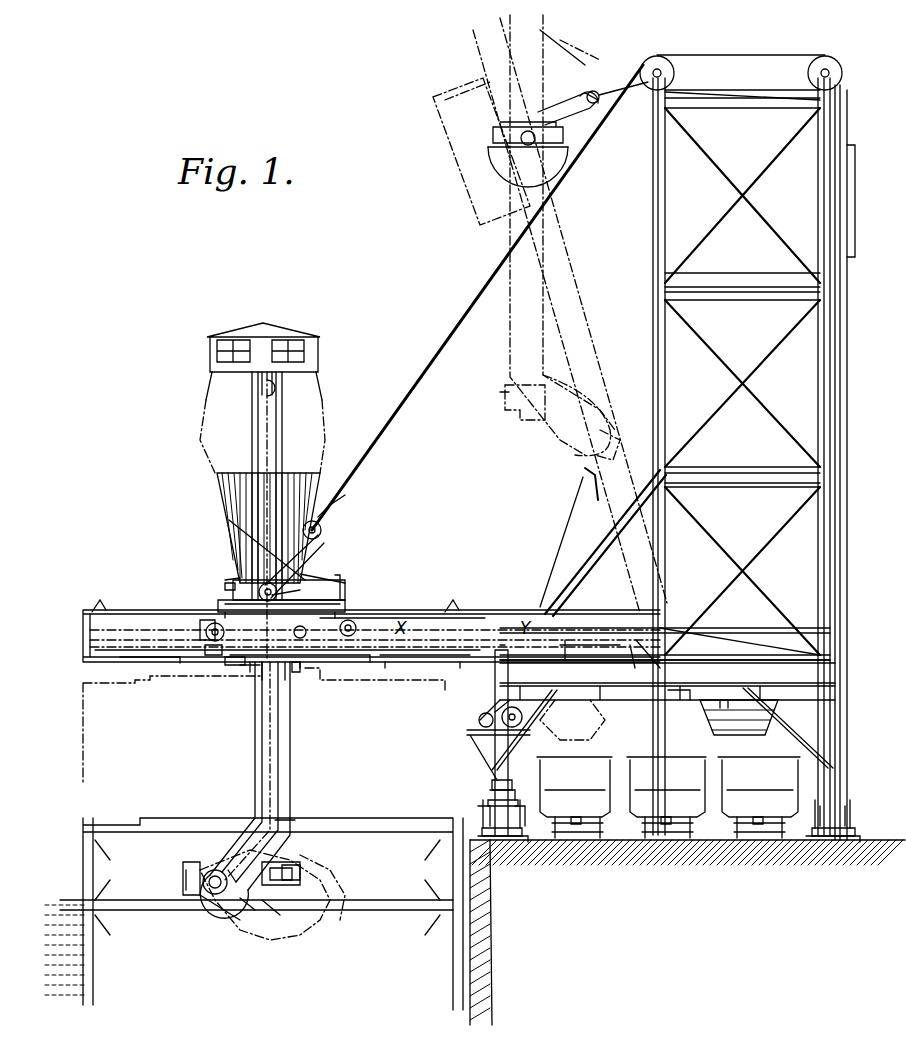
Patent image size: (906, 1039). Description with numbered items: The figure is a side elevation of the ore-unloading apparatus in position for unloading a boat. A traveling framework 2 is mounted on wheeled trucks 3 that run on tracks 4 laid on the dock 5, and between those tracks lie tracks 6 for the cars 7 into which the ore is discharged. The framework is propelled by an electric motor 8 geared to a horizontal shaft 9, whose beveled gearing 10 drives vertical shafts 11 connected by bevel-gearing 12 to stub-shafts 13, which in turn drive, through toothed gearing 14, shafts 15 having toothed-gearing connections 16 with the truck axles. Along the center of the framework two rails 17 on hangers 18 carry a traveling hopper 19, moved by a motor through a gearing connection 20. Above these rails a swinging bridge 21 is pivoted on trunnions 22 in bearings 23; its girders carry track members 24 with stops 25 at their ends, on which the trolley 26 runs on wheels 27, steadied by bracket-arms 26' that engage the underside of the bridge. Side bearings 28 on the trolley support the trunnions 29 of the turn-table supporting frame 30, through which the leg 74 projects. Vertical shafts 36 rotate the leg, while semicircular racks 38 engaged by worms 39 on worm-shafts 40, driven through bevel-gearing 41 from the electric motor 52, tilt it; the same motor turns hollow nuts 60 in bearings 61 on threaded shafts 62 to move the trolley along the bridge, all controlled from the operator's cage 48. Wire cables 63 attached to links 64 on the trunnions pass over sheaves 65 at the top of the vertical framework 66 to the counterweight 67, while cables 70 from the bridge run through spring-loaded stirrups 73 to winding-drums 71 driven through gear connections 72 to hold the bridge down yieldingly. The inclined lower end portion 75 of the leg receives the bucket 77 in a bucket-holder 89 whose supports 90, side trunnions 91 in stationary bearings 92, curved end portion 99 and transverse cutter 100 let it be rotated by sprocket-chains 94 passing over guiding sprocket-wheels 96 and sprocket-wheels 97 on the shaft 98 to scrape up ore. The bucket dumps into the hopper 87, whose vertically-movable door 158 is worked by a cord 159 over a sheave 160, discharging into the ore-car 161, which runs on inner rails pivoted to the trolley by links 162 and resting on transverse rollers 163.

The traveling framework 2 is at (667, 681).
The wheeled trucks 3 is at (668, 824).
The tracks 4 is at (822, 842).
The dock 5 is at (687, 932).
The tracks 6 is at (765, 842).
The cars 7 is at (668, 787).
The electric motor 8 is at (590, 665).
The horizontal shaft 9 is at (645, 662).
The beveled gearing 10 is at (805, 680).
The vertical shafts 11 is at (815, 742).
The bevel-gearing 12 is at (830, 795).
The stub-shafts 13 is at (652, 793).
The toothed gearing 14 is at (655, 807).
The shafts 15 is at (665, 801).
The toothed-gearing connections 16 is at (666, 813).
The rails 17 is at (725, 705).
The hangers 18 is at (600, 705).
The traveling hopper 19 is at (700, 725).
The gearing connection 20 is at (686, 702).
The swinging bridge 21 is at (560, 312).
The trunnions 22 is at (665, 635).
The bearings 23 is at (700, 645).
The track members 24 is at (400, 608).
The stops 25 is at (283, 598).
The trolley 26 is at (369, 341).
The bracket-arms 26' is at (285, 694).
The wheels 27 is at (540, 108).
The side bearings 28 is at (322, 572).
The trunnions 29 is at (232, 578).
The turn-table supporting frame 30 is at (225, 586).
The vertical shafts 36 is at (282, 447).
The semicircular racks 38 is at (575, 165).
The worms 39 is at (290, 672).
The worm-shafts 40 is at (230, 668).
The bevel-gearing 41 is at (205, 650).
The operator's cage 48 is at (505, 405).
The electric motor 52 is at (200, 630).
The hollow nuts 60 is at (230, 664).
The bearings 61 is at (190, 664).
The threaded shafts 62 is at (250, 672).
The wire cables 63 is at (445, 348).
The links 64 is at (570, 115).
The sheaves 65 is at (826, 56).
The vertical framework 66 is at (660, 219).
The counterweight 67 is at (838, 245).
The cables 70 is at (565, 535).
The winding-drums 71 is at (490, 700).
The gear connections 72 is at (478, 720).
The stirrups 73 is at (590, 495).
The leg 74 is at (512, 338).
The lower end portion 75 is at (590, 403).
The bucket 77 is at (340, 878).
The hopper 87 is at (545, 60).
The bucket-holder 89 is at (605, 448).
The supports 90 is at (185, 864).
The side trunnions 91 is at (205, 900).
The stationary bearings 92 is at (184, 882).
The sprocket-chains 94 is at (255, 780).
The guiding sprocket-wheels 96 is at (292, 822).
The sprocket-wheels 97 is at (276, 390).
The shaft 98 is at (290, 385).
The curved end portion 99 is at (262, 895).
The transverse cutter 100 is at (320, 905).
The vertically-movable door 158 is at (332, 575).
The cord 159 is at (323, 527).
The sheave 160 is at (325, 512).
The ore-car 161 is at (352, 664).
The links 162 is at (305, 630).
The transverse rollers 163 is at (412, 664).